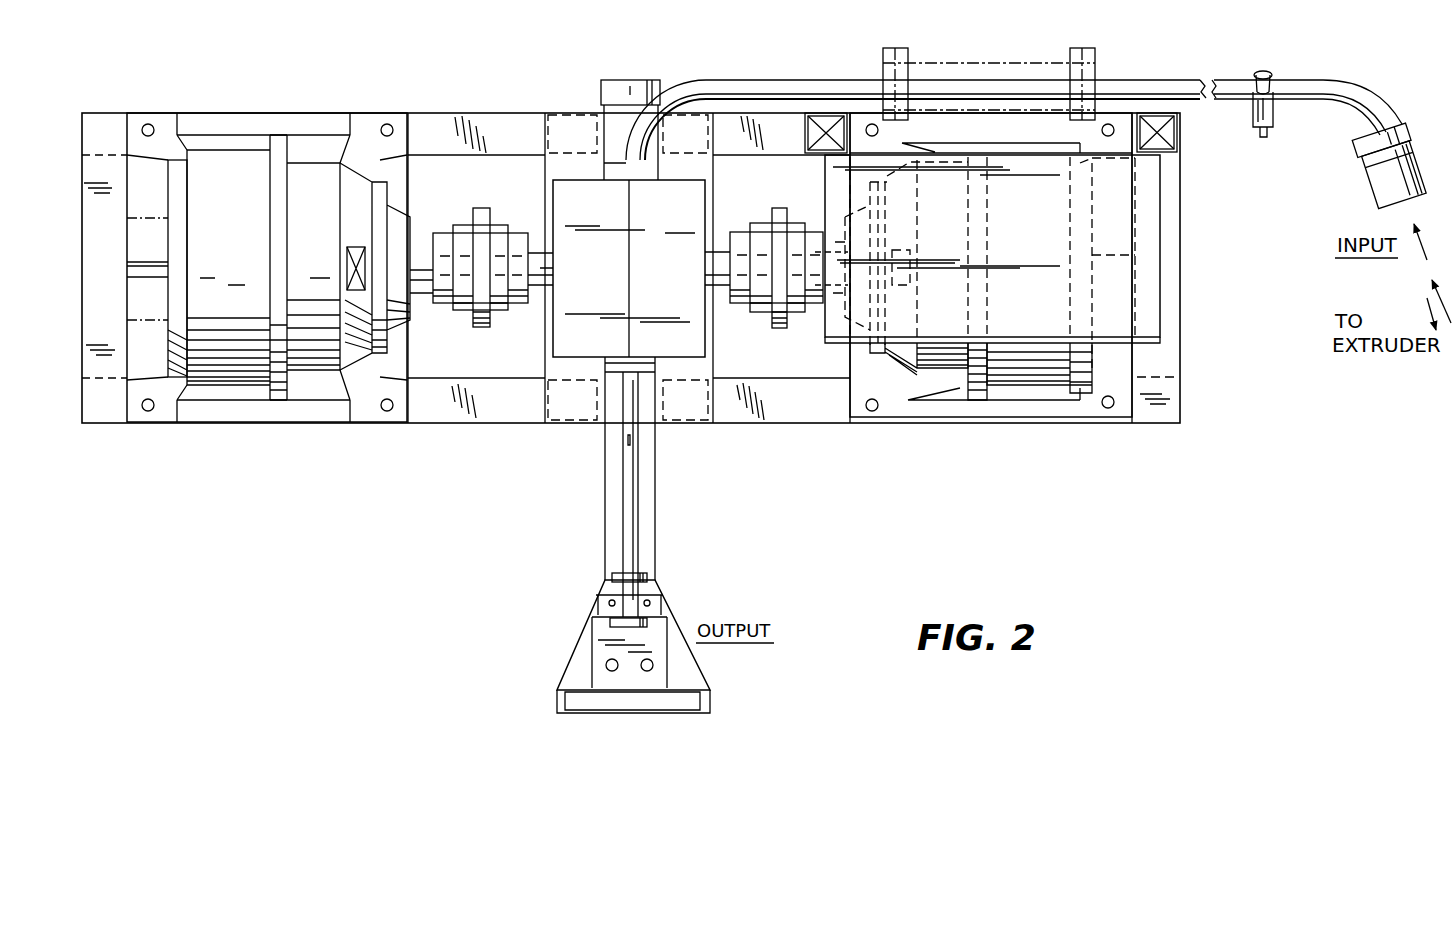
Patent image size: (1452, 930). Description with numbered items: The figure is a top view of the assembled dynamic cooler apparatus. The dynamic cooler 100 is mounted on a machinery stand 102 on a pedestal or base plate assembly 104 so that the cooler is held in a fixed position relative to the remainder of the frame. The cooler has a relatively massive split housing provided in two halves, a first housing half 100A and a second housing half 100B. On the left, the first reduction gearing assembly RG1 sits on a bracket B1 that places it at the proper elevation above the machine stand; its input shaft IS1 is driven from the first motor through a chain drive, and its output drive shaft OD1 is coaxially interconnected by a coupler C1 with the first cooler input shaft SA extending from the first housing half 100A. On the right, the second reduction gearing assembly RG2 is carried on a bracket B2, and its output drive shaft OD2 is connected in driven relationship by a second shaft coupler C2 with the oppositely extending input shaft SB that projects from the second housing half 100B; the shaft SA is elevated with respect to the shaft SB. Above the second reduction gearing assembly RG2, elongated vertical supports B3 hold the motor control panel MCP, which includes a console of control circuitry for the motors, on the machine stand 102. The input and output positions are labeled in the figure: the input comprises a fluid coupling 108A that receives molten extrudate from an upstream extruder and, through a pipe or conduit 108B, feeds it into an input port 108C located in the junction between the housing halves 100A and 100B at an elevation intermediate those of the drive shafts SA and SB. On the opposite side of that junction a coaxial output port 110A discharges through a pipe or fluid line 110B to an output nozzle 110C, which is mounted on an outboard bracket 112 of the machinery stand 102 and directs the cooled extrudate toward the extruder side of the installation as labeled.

The machinery stand 102 is at (1170, 387).
The bracket B1 is at (143, 391).
The input shaft IS1 is at (138, 273).
The reduction gearing assembly RG1 is at (248, 289).
The output drive shaft OD1 is at (419, 304).
The coupler C1 is at (472, 231).
The first cooler input shaft SA is at (546, 290).
The dynamic cooler 100 is at (604, 278).
The first housing half 100A is at (622, 278).
The second housing half 100B is at (697, 278).
The input port 108C is at (628, 173).
The pipe 108B is at (1116, 79).
The fluid coupling 108A is at (1415, 152).
The vertical supports B3 is at (826, 113).
The bracket B2 is at (1122, 392).
The motor control panel MCP is at (1049, 315).
The second reduction gearing assembly RG2 is at (1046, 258).
The output drive shaft OD2 is at (834, 243).
The input shaft SB is at (720, 243).
The second shaft coupler C2 is at (795, 314).
The base plate assembly 104 is at (678, 410).
The output port 110A is at (619, 368).
The pipe 110B is at (625, 495).
The output nozzle 110C is at (603, 624).
The outboard bracket 112 is at (693, 662).